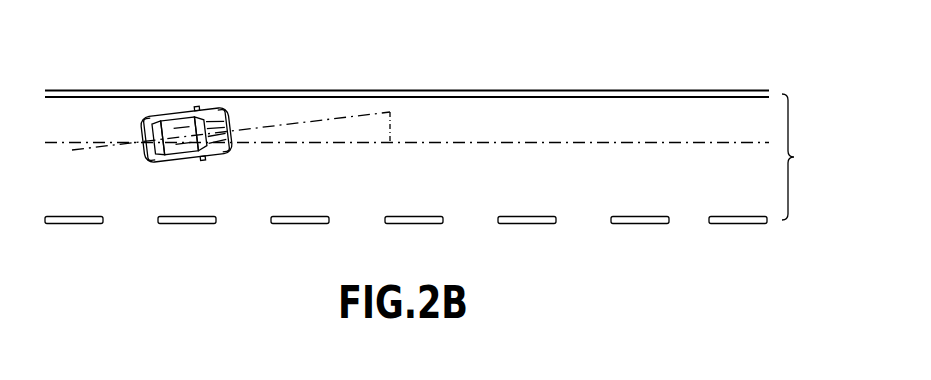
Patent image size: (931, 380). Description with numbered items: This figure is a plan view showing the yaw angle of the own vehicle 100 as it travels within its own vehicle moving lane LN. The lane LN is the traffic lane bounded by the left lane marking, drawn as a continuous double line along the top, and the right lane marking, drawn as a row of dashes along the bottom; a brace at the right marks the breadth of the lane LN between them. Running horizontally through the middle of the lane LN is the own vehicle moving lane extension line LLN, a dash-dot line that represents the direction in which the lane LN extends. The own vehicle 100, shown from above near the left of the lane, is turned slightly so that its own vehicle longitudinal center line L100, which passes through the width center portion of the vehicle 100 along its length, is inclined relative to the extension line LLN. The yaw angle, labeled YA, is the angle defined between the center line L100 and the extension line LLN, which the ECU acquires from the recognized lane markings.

The own vehicle 100 is at (185, 113).
The own vehicle longitudinal center line L100 is at (322, 116).
The own vehicle moving lane extension line LLN is at (527, 141).
The own vehicle moving lane LN is at (804, 157).
The yaw angle YA is at (409, 126).